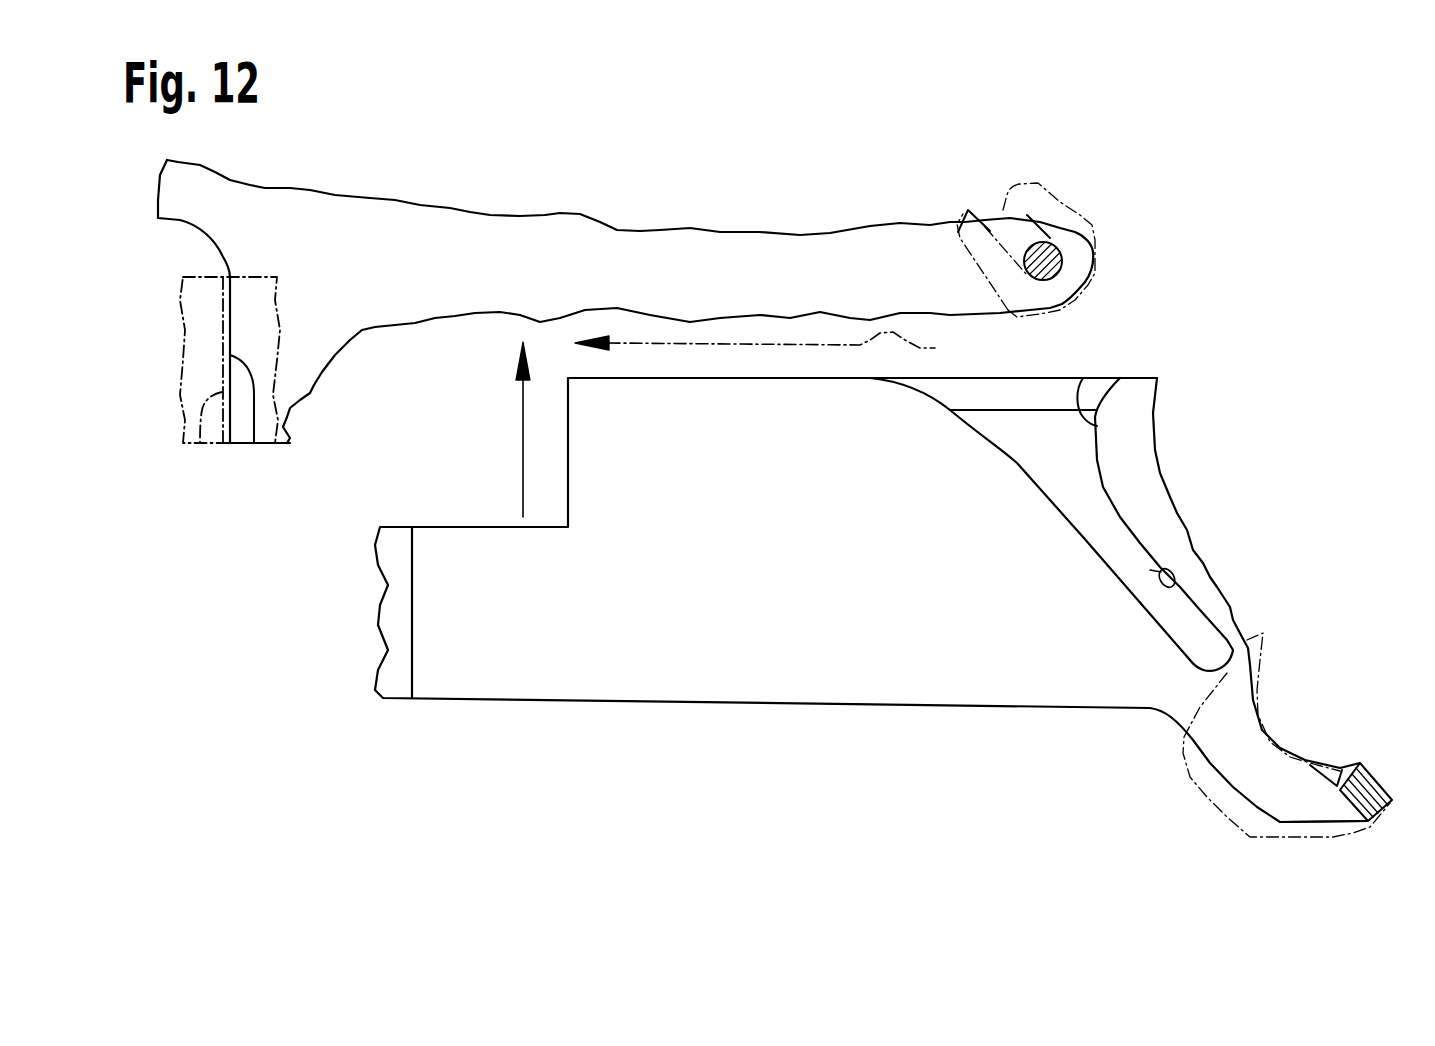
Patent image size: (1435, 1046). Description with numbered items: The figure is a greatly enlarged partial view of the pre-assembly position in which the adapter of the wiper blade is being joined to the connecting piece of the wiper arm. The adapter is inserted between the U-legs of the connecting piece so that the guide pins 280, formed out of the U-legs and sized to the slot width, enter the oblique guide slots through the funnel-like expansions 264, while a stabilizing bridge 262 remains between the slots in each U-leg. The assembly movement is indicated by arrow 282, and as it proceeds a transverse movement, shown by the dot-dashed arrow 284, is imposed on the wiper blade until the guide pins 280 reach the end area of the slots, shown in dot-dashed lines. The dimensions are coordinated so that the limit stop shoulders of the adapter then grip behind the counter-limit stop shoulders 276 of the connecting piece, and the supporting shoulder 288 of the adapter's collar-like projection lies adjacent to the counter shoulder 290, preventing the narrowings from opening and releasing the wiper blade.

The stabilizing bridge 262 is at (1035, 387).
The funnel-like expansion 264 is at (1088, 380).
The counter-limit stop shoulder 276 is at (254, 447).
The guide pin 280 is at (1062, 256).
The assembly movement arrow 282 is at (518, 443).
The transverse movement arrow 284 is at (935, 348).
The supporting shoulder 288 is at (1350, 798).
The counter shoulder 290 is at (1345, 762).